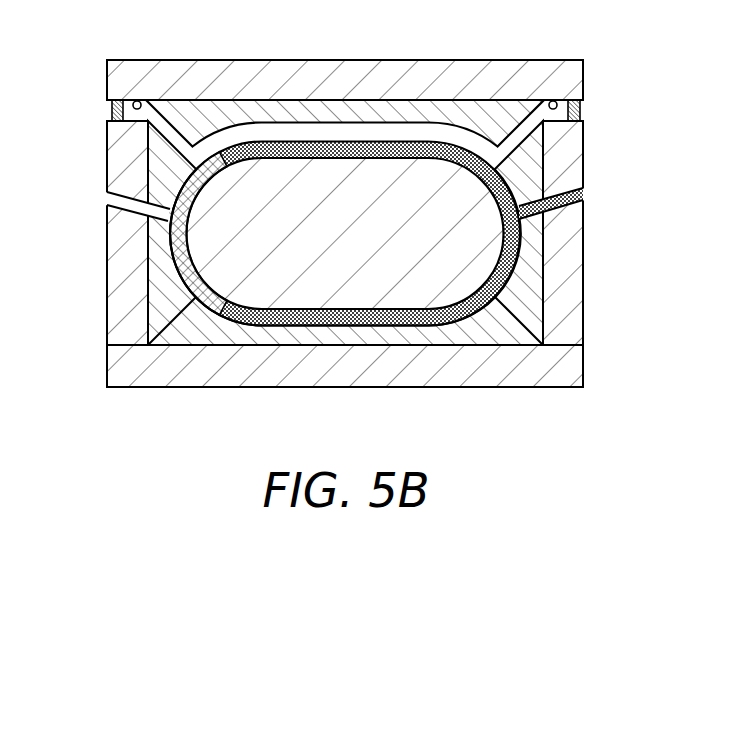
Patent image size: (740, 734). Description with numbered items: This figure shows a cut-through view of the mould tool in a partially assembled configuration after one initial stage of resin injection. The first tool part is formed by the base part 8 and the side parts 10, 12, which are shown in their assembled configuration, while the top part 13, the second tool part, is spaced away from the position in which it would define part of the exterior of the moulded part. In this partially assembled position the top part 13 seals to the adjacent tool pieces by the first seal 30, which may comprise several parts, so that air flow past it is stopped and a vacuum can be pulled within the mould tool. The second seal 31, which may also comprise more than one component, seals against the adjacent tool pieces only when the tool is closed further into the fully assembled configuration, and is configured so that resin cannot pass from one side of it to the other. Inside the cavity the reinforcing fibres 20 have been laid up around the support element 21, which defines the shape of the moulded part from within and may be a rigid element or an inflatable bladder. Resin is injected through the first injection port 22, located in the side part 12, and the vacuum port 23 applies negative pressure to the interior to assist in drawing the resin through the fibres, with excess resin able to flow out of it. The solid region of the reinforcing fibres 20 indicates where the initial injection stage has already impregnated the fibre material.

The base part 8 is at (347, 378).
The side part 10 is at (115, 262).
The side part 12 is at (580, 262).
The top part 13 is at (344, 68).
The reinforcing fibres 20 is at (283, 312).
The support element 21 is at (405, 274).
The first injection port 22 is at (583, 195).
The vacuum port 23 is at (107, 198).
The first seal 30 is at (112, 108).
The second seal 31 is at (137, 100).